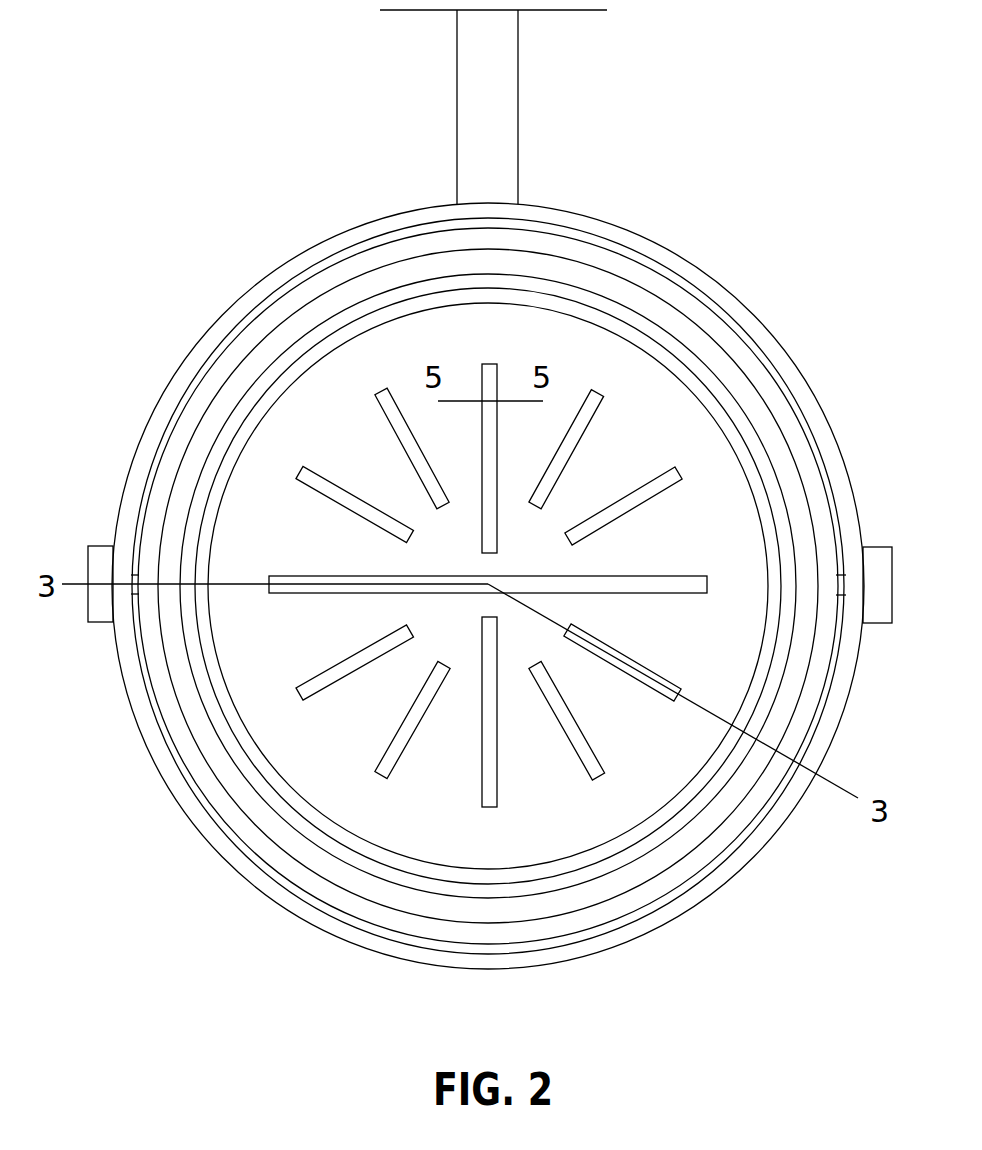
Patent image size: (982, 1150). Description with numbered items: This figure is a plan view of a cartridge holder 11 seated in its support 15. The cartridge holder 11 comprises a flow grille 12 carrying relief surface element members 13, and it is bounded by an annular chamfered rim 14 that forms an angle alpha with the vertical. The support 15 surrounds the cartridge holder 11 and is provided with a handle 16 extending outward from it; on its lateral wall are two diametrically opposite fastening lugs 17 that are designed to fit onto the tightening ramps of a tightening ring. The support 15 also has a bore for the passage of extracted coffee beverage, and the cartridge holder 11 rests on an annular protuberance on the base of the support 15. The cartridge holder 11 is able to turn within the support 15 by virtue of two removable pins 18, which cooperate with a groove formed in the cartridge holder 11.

The cartridge holder 11 is at (617, 262).
The flow grille 12 is at (325, 768).
The relief surface element members 13 is at (490, 795).
The annular chamfered rim 14 is at (688, 360).
The support 15 is at (278, 273).
The handle 16 is at (480, 143).
The fastening lugs 17 is at (100, 553).
The removable pins 18 is at (841, 570).